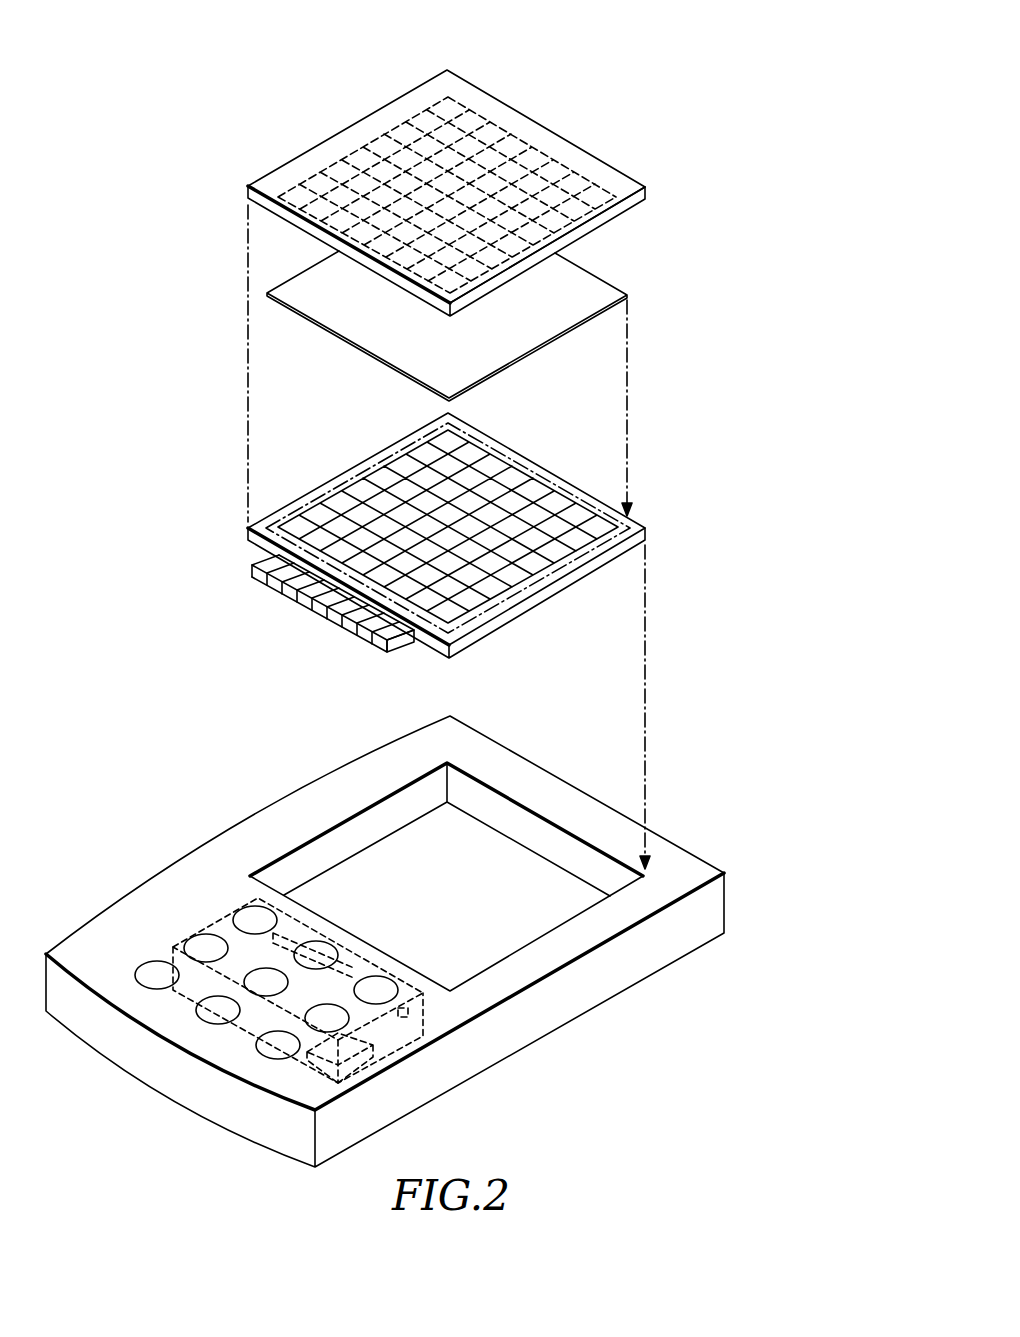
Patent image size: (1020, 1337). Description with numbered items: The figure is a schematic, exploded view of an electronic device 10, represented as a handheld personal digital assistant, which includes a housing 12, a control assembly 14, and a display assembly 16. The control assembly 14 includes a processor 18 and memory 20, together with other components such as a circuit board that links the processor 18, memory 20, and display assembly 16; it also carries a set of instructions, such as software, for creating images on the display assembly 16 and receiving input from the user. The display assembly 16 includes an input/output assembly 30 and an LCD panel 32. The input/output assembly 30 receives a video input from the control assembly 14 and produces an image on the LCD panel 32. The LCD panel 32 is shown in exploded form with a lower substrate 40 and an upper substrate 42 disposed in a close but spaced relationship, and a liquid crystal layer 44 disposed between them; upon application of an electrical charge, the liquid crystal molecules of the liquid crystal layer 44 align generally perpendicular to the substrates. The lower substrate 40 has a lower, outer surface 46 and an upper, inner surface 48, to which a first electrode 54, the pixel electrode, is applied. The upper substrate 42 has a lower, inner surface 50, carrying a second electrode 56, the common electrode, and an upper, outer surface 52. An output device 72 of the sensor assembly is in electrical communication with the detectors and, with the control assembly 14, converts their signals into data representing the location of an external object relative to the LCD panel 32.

The electronic device 10 is at (233, 766).
The housing 12 is at (131, 906).
The control assembly 14 is at (529, 1041).
The display assembly 16 is at (596, 106).
The processor 18 is at (220, 923).
The memory 20 is at (327, 1071).
The input/output assembly 30 is at (311, 589).
The LCD panel 32 is at (233, 187).
The lower substrate 40 is at (502, 447).
The upper substrate 42 is at (610, 178).
The liquid crystal layer 44 is at (333, 334).
The lower, outer surface 46 is at (551, 599).
The upper, inner surface 48 is at (558, 487).
The lower, inner surface 50 is at (596, 228).
The upper, outer surface 52 is at (508, 113).
The first electrode 54 is at (333, 510).
The second electrode 56 is at (353, 150).
The output device 72 is at (261, 567).